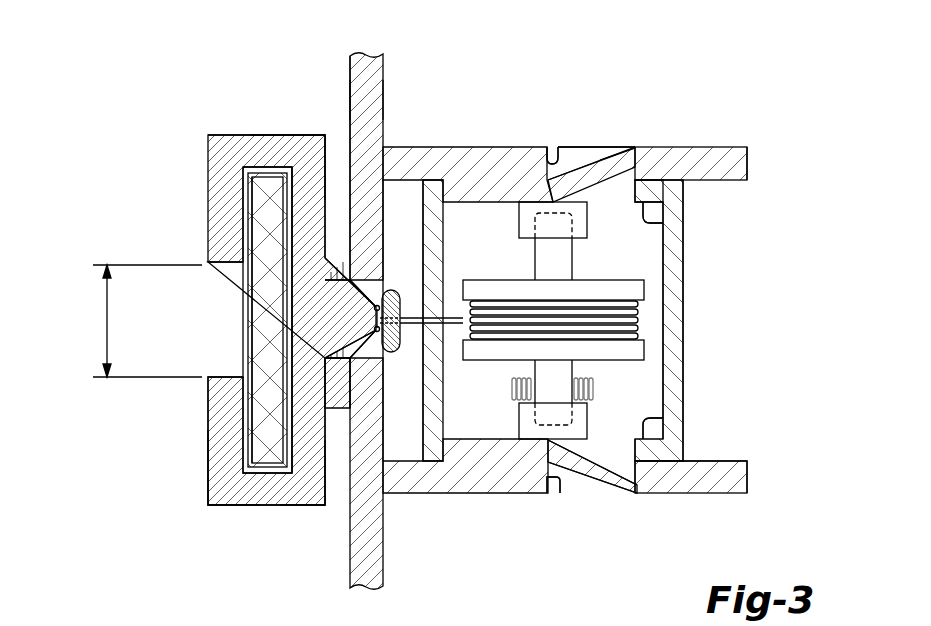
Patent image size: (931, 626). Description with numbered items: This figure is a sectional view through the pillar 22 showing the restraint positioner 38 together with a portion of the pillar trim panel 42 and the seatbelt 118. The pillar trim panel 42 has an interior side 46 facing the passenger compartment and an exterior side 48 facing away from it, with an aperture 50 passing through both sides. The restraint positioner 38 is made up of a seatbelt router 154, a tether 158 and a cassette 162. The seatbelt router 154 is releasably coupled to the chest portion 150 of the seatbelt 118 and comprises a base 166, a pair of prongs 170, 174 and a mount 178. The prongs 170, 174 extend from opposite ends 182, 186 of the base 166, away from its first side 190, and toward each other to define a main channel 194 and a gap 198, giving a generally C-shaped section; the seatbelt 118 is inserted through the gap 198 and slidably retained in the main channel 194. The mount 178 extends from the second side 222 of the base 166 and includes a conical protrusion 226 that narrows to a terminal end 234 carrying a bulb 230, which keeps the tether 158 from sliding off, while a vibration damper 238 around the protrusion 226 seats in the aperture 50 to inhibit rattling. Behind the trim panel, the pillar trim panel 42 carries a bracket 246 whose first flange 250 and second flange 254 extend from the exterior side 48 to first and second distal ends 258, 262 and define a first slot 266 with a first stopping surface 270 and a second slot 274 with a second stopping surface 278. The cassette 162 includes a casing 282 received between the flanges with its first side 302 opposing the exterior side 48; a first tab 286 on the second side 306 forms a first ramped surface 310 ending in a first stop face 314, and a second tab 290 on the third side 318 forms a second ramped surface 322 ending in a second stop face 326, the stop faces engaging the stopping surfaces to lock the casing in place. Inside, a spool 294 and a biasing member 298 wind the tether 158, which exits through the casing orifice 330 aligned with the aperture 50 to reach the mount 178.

The pillar 22 is at (349, 85).
The restraint positioner 38 is at (177, 518).
The pillar trim panel 42 is at (366, 53).
The interior side 46 is at (350, 89).
The exterior side 48 is at (383, 92).
The aperture 50 is at (344, 384).
The seatbelt 118 is at (267, 466).
The chest portion 150 is at (258, 308).
The seatbelt router 154 is at (209, 136).
The tether 158 is at (450, 330).
The cassette 162 is at (683, 246).
The base 166 is at (381, 538).
The prong 170 is at (208, 507).
The prong 174 is at (217, 173).
The mount 178 is at (345, 307).
The end 182 is at (318, 507).
The end 186 is at (318, 135).
The first side 190 is at (270, 430).
The main channel 194 is at (245, 222).
The gap 198 is at (106, 315).
The second side 222 is at (325, 155).
The protrusion 226 is at (345, 350).
The bulb 230 is at (392, 353).
The terminal end 234 is at (379, 305).
The vibration damper 238 is at (322, 385).
The bracket 246 is at (725, 148).
The first flange 250 is at (735, 147).
The second flange 254 is at (740, 493).
The first distal end 258 is at (747, 172).
The second distal end 262 is at (747, 478).
The first slot 266 is at (551, 150).
The first stopping surface 270 is at (641, 177).
The second slot 274 is at (550, 495).
The second stopping surface 278 is at (640, 468).
The casing 282 is at (688, 295).
The first tab 286 is at (609, 163).
The second tab 290 is at (597, 470).
The spool 294 is at (645, 350).
The biasing member 298 is at (600, 388).
The first side 302 is at (410, 440).
The second side 306 is at (661, 222).
The first ramped surface 310 is at (571, 160).
The first stop face 314 is at (628, 165).
The third side 318 is at (655, 420).
The second ramped surface 322 is at (575, 478).
The second stop face 326 is at (637, 485).
The casing orifice 330 is at (430, 305).